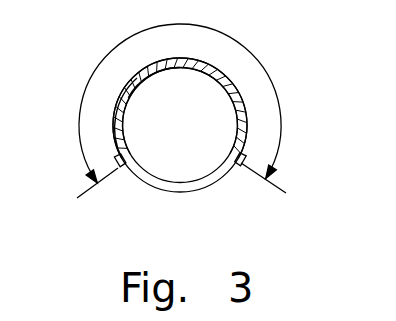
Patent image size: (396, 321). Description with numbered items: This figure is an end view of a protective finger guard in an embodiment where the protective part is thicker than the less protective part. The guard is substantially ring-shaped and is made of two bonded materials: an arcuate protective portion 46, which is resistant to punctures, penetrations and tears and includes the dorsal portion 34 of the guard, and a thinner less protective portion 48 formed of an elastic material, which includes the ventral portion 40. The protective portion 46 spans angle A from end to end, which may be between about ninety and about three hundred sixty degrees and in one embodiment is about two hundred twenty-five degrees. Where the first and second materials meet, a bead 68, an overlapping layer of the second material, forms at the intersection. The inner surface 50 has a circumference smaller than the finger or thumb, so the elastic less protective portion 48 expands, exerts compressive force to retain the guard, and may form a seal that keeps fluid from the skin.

The angle A is at (180, 92).
The dorsal portion 34 is at (238, 97).
The ventral portion 40 is at (168, 190).
The protective portion 46 is at (137, 78).
The less protective portion 48 is at (198, 185).
The inner surface 50 is at (128, 97).
The bead 68 is at (122, 168).